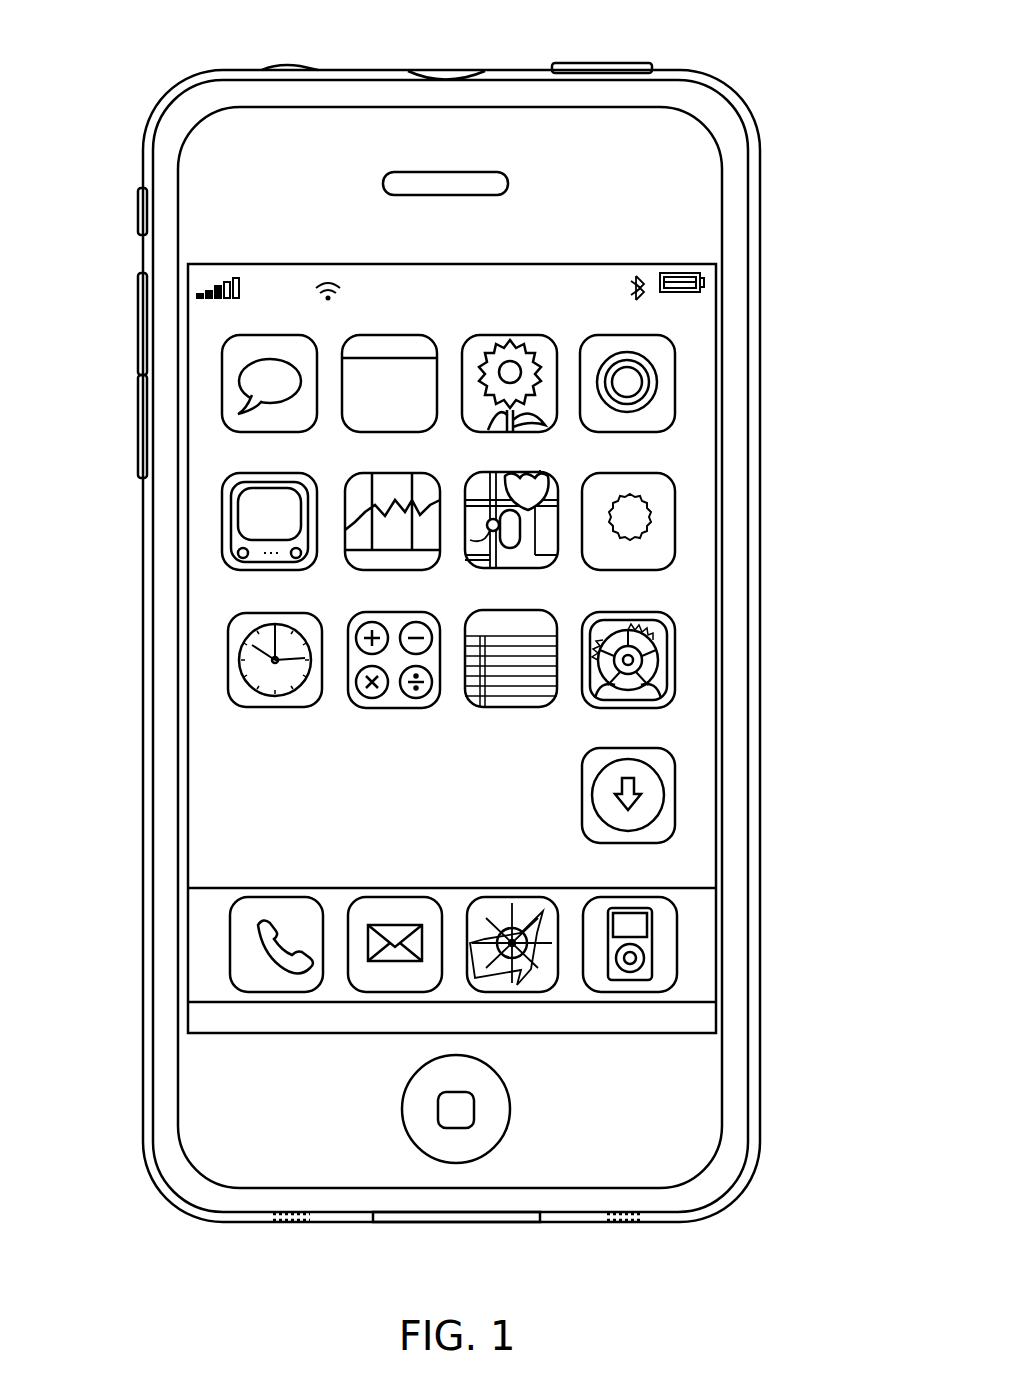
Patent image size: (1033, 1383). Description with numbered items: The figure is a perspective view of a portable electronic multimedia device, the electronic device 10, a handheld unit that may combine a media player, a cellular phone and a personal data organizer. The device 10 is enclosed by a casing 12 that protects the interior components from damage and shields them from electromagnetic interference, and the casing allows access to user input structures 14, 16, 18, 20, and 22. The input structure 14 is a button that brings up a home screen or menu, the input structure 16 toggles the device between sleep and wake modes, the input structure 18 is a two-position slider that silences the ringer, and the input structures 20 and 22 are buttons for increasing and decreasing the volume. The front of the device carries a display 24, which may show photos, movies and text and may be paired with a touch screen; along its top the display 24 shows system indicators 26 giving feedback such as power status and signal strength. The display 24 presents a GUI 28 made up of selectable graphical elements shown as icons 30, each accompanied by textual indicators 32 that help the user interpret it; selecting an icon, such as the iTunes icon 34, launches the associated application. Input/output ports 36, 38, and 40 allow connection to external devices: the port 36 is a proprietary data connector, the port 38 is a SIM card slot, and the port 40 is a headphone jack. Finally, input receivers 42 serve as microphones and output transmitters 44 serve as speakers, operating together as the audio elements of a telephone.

The electronic device 10 is at (448, 635).
The casing 12 is at (762, 255).
The user input structure 14 is at (505, 1088).
The user input structure 16 is at (610, 62).
The user input structure 18 is at (138, 210).
The user input structure 20 is at (138, 330).
The user input structure 22 is at (140, 425).
The display 24 is at (720, 512).
The system indicators 26 is at (228, 290).
The GUI 28 is at (524, 652).
The icons 30 is at (395, 334).
The textual indicators 32 is at (468, 458).
The iTunes icon 34 is at (583, 815).
The input/output port 36 is at (452, 1224).
The input/output port 38 is at (447, 70).
The input/output port 40 is at (298, 68).
The input receivers 42 is at (278, 1224).
The output transmitters 44 is at (470, 174).